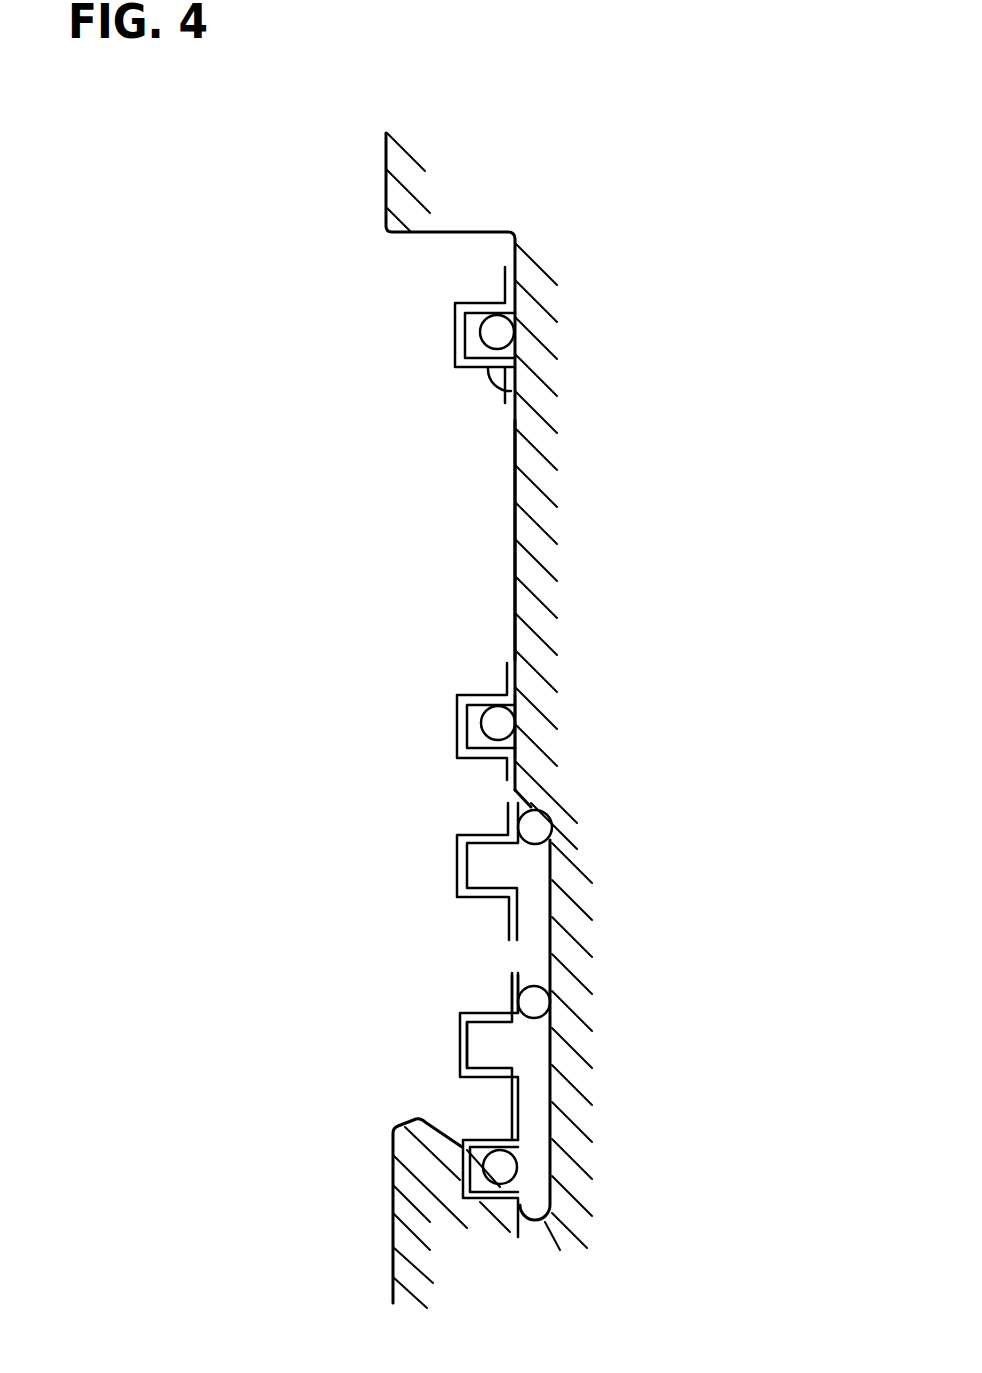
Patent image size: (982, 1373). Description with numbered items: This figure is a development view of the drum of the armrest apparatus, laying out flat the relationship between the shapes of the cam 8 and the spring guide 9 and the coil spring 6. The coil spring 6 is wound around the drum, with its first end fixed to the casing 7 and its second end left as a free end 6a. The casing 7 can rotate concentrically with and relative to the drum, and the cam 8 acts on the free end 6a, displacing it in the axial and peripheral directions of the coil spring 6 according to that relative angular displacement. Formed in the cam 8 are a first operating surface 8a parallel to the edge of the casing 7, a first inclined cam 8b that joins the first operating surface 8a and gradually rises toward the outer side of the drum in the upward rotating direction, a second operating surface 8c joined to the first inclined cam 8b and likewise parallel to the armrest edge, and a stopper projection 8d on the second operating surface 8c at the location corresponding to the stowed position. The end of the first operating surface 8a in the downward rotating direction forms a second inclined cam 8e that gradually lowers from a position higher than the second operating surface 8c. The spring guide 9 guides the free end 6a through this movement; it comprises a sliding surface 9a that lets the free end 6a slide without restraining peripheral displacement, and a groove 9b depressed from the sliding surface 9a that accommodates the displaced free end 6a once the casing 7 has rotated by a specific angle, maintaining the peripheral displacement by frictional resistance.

The coil spring 6 is at (573, 913).
The free end 6a is at (540, 997).
The casing 7 is at (460, 1018).
The cam 8 is at (498, 497).
The first operating surface 8a is at (550, 1040).
The first inclined cam 8b is at (540, 790).
The second operating surface 8c is at (517, 600).
The stopper projection 8d is at (523, 373).
The second inclined cam 8e is at (467, 1170).
The spring guide 9 is at (447, 1040).
The sliding surface 9a is at (517, 980).
The groove 9b is at (490, 1047).